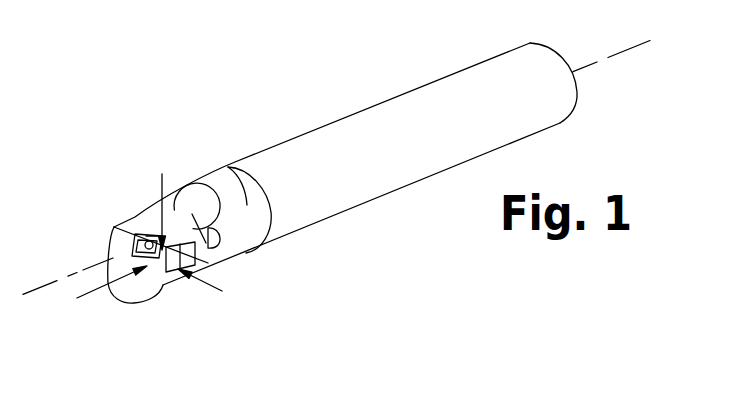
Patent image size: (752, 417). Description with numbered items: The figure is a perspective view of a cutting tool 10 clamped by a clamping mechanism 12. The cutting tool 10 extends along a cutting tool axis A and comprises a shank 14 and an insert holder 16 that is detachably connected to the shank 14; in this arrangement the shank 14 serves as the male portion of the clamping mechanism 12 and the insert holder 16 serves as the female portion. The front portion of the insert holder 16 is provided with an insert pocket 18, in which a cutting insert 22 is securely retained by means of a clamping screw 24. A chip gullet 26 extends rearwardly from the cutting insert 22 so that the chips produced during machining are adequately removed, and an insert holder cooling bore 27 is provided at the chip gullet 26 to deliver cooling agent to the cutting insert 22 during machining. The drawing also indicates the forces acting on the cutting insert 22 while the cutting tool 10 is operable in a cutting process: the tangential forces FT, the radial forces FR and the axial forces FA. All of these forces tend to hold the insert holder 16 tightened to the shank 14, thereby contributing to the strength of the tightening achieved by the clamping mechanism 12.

The cutting tool 10 is at (368, 62).
The clamping mechanism 12 is at (262, 166).
The shank 14 is at (455, 60).
The insert holder 16 is at (268, 250).
The insert pocket 18 is at (137, 239).
The cutting insert 22 is at (150, 278).
The clamping screw 24 is at (146, 236).
The chip gullet 26 is at (177, 210).
The insert holder cooling bore 27 is at (244, 235).
The cutting tool axis A is at (604, 55).
The tangential forces FT is at (159, 198).
The radial forces FR is at (200, 293).
The axial forces FA is at (97, 300).